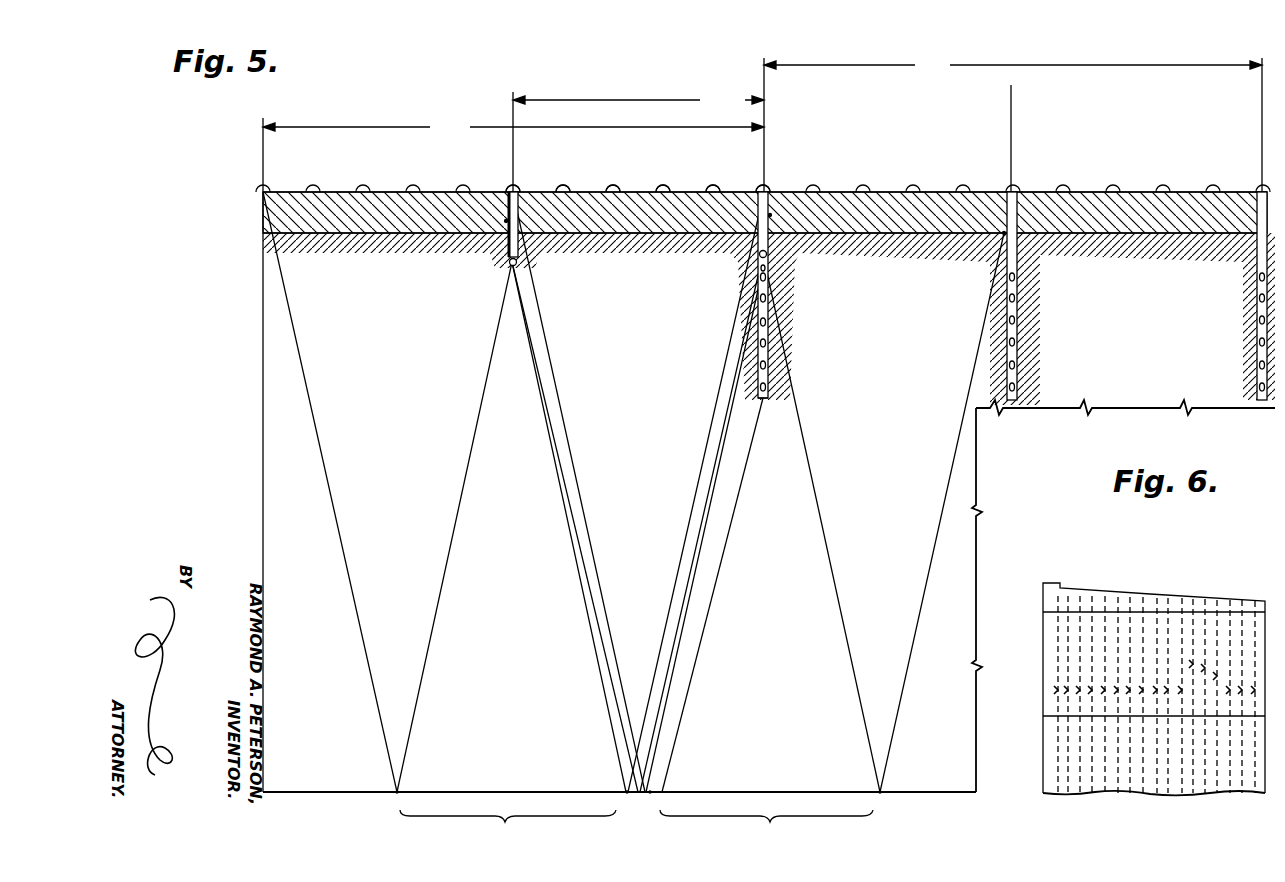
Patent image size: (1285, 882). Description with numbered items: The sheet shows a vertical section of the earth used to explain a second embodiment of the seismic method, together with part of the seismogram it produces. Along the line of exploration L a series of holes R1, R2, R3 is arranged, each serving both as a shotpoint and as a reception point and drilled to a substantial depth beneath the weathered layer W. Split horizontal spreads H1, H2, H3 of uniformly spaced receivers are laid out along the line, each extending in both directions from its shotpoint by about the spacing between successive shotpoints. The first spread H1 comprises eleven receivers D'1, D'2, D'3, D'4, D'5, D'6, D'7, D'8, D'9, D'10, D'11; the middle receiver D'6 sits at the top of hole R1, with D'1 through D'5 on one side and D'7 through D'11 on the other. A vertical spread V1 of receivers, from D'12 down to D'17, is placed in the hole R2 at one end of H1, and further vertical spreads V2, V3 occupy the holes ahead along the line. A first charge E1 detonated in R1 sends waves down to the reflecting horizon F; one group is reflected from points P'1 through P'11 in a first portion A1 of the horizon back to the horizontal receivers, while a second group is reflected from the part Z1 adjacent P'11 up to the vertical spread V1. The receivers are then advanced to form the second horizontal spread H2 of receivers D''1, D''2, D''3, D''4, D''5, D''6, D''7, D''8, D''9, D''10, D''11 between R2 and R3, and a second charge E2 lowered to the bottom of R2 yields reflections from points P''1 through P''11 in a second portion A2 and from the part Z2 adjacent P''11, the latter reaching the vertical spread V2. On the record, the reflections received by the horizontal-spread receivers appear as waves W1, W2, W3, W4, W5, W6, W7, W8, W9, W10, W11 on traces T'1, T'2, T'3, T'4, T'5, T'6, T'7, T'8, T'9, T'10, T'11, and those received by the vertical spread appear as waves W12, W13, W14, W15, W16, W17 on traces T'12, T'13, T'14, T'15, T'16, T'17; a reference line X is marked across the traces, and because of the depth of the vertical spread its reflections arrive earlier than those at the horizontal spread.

In FIG. 5, the wall of the pattern bar W is at (1125, 203).
In FIG. 5, the line of exploration L is at (1252, 187).
In FIG. 5, the first horizontal spread H1 is at (513, 125).
In FIG. 5, the second horizontal spread H2 is at (638, 102).
In FIG. 5, the third horizontal spread H3 is at (1013, 125).
In FIG. 5, the receiver D'1 is at (273, 178).
In FIG. 5, the receiver D'2 is at (323, 178).
In FIG. 5, the receiver D'3 is at (373, 178).
In FIG. 5, the receiver D'4 is at (423, 178).
In FIG. 5, the receiver D'5 is at (473, 178).
In FIG. 5, the middle receiver D'6 is at (520, 178).
In FIG. 5, the receiver D'7 is at (565, 178).
In FIG. 5, the receiver D'8 is at (615, 178).
In FIG. 5, the receiver D'9 is at (665, 178).
In FIG. 5, the receiver D'10 is at (714, 178).
In FIG. 5, the receiver D'11 is at (773, 178).
In FIG. 5, the receiver D'12 is at (776, 418).
In FIG. 5, the receiver D'17 is at (791, 272).
In FIG. 5, the receiver D''1 is at (526, 169).
In FIG. 5, the receiver D''2 is at (575, 169).
In FIG. 5, the receiver D''3 is at (625, 169).
In FIG. 5, the receiver D''4 is at (675, 169).
In FIG. 5, the receiver D''5 is at (725, 169).
In FIG. 5, the receiver D''6 is at (775, 169).
In FIG. 5, the receiver D''7 is at (822, 169).
In FIG. 5, the receiver D''8 is at (873, 169).
In FIG. 5, the receiver D''9 is at (924, 169).
In FIG. 5, the receiver D''10 is at (975, 169).
In FIG. 5, the receiver D''11 is at (1024, 169).
In FIG. 5, the first charge of explosive E1 is at (508, 264).
In FIG. 5, the second charge of explosive E2 is at (759, 256).
In FIG. 5, the shothole R1 is at (505, 223).
In FIG. 5, the shothole R2 is at (771, 217).
In FIG. 5, the shothole R3 is at (1002, 236).
In FIG. 5, the first vertical spread V1 is at (785, 280).
In FIG. 5, the second vertical spread V2 is at (1033, 275).
In FIG. 5, the third vertical spread V3 is at (1248, 280).
In FIG. 5, the reflecting horizon F is at (322, 790).
In FIG. 5, the reflection point P'1 is at (387, 806).
In FIG. 5, the reflection point P'11 is at (625, 804).
In FIG. 5, the reflection point P''1 is at (659, 804).
In FIG. 5, the reflection point P''11 is at (889, 804).
In FIG. 5, the first reflecting portion A1 is at (508, 826).
In FIG. 5, the second reflecting portion A2 is at (766, 826).
In FIG. 5, the reflecting part Z1 is at (654, 786).
In FIG. 5, the reflecting part Z2 is at (900, 787).
In FIG. 6, the reference line X is at (1043, 612).
In FIG. 6, the horizontal-spread trace T'1 is at (1045, 568).
In FIG. 6, the horizontal-spread trace T'2 is at (1055, 578).
In FIG. 6, the horizontal-spread trace T'3 is at (1068, 568).
In FIG. 6, the horizontal-spread trace T'4 is at (1079, 578).
In FIG. 6, the horizontal-spread trace T'5 is at (1093, 568).
In FIG. 6, the horizontal-spread trace T'6 is at (1106, 578).
In FIG. 6, the horizontal-spread trace T'7 is at (1119, 568).
In FIG. 6, the horizontal-spread trace T'8 is at (1131, 578).
In FIG. 6, the horizontal-spread trace T'9 is at (1146, 569).
In FIG. 6, the horizontal-spread trace T'10 is at (1159, 578).
In FIG. 6, the horizontal-spread trace T'11 is at (1177, 569).
In FIG. 6, the vertical-spread trace T'12 is at (1191, 579).
In FIG. 6, the vertical-spread trace T'13 is at (1209, 569).
In FIG. 6, the vertical-spread trace T'14 is at (1224, 579).
In FIG. 6, the vertical-spread trace T'15 is at (1242, 570).
In FIG. 6, the vertical-spread trace T'16 is at (1255, 579).
In FIG. 6, the vertical-spread trace T'17 is at (1256, 560).
In FIG. 6, the reflected wave W1 is at (1058, 690).
In FIG. 6, the reflected wave W2 is at (1068, 690).
In FIG. 6, the reflected wave W3 is at (1080, 690).
In FIG. 6, the reflected wave W4 is at (1092, 690).
In FIG. 6, the reflected wave W5 is at (1105, 690).
In FIG. 6, the reflected wave W6 is at (1118, 690).
In FIG. 6, the reflected wave W7 is at (1130, 690).
In FIG. 6, the reflected wave W8 is at (1143, 690).
In FIG. 6, the reflected wave W9 is at (1157, 690).
In FIG. 6, the reflected wave W10 is at (1168, 690).
In FIG. 6, the reflected wave W11 is at (1182, 690).
In FIG. 6, the reflected wave W12 is at (1191, 662).
In FIG. 6, the reflected wave W13 is at (1203, 666).
In FIG. 6, the reflected wave W14 is at (1215, 674).
In FIG. 6, the reflected wave W15 is at (1230, 690).
In FIG. 6, the reflected wave W16 is at (1242, 690).
In FIG. 6, the reflected wave W17 is at (1255, 690).